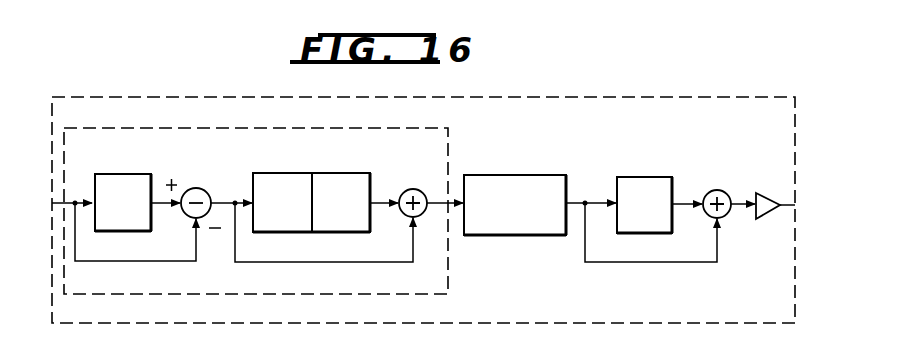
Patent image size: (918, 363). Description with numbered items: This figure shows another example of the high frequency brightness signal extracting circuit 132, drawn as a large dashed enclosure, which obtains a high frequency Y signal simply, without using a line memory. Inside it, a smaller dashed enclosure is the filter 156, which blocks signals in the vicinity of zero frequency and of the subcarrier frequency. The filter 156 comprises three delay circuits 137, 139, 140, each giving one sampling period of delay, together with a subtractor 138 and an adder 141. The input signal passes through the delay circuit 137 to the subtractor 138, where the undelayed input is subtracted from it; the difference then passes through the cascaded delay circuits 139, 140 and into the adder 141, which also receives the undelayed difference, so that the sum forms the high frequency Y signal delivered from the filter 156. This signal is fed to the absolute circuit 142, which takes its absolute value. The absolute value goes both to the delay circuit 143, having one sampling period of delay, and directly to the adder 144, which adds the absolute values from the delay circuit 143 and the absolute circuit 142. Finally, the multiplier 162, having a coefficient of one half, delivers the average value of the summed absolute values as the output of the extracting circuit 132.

The high frequency brightness signal extracting circuit 132 is at (423, 323).
The filter 156 is at (447, 293).
The delay circuit 137 is at (139, 157).
The subtractor 138 is at (200, 188).
The delay circuit 139 is at (295, 158).
The delay circuit 140 is at (364, 158).
The adder 141 is at (418, 189).
The absolute circuit 142 is at (530, 157).
The delay circuit 143 is at (650, 177).
The adder 144 is at (720, 190).
The multiplier 162 is at (774, 178).